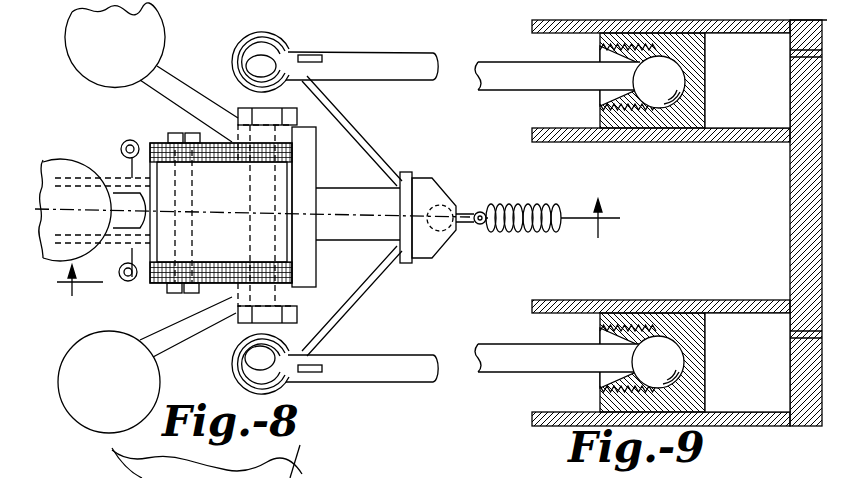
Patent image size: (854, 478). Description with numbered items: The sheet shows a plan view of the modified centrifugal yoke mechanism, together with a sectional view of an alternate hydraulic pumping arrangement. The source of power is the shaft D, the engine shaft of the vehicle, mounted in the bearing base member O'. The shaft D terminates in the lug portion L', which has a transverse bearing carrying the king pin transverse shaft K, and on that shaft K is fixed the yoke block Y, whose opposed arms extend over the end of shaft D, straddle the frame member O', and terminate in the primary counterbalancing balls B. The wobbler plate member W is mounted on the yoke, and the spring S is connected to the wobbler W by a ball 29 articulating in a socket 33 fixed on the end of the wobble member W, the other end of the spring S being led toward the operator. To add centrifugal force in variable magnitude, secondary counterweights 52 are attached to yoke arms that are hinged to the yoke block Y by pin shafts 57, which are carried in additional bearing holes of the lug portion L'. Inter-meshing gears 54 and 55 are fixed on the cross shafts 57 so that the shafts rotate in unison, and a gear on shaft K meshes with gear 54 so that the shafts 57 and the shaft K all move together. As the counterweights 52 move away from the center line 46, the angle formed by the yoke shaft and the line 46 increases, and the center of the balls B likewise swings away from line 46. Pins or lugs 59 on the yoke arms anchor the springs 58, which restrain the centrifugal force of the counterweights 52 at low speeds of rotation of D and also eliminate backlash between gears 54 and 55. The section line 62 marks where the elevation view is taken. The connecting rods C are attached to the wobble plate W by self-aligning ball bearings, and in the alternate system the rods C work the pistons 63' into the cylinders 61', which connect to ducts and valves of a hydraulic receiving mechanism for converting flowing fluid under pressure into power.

In FIG. 8, the counter balancing balls B is at (83, 62).
In FIG. 8, the yoke block Y is at (178, 84).
In FIG. 8, the king pin transverse shaft K is at (252, 106).
In FIG. 8, the connecting rods C is at (396, 60).
In FIG. 9, the connecting rods C is at (497, 68).
In FIG. 8, the wobbler plate member W is at (358, 153).
In FIG. 8, the socket 33 is at (428, 190).
In FIG. 8, the ball 29 is at (457, 226).
In FIG. 8, the spring S is at (550, 204).
In FIG. 8, the section line 62 is at (331, 257).
In FIG. 8, the center line 46 is at (50, 161).
In FIG. 8, the bearing base member O' is at (102, 180).
In FIG. 8, the shaft D is at (122, 187).
In FIG. 8, the springs 58 is at (118, 143).
In FIG. 8, the pins or lugs 59 is at (126, 139).
In FIG. 8, the pin shafts 57 is at (170, 133).
In FIG. 8, the gear 55 is at (190, 133).
In FIG. 8, the counterweights 52 is at (72, 248).
In FIG. 8, the lug portion L' is at (191, 239).
In FIG. 8, the gear 54 is at (235, 278).
In FIG. 9, the pistons 63' is at (652, 222).
In FIG. 9, the cylinders 61' is at (747, 222).